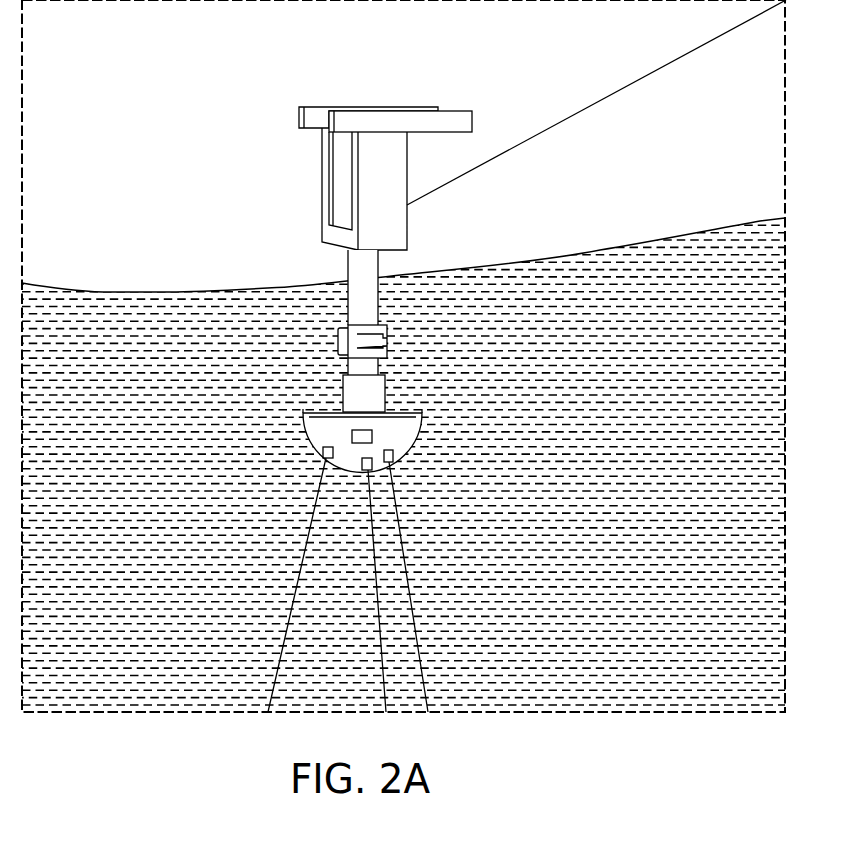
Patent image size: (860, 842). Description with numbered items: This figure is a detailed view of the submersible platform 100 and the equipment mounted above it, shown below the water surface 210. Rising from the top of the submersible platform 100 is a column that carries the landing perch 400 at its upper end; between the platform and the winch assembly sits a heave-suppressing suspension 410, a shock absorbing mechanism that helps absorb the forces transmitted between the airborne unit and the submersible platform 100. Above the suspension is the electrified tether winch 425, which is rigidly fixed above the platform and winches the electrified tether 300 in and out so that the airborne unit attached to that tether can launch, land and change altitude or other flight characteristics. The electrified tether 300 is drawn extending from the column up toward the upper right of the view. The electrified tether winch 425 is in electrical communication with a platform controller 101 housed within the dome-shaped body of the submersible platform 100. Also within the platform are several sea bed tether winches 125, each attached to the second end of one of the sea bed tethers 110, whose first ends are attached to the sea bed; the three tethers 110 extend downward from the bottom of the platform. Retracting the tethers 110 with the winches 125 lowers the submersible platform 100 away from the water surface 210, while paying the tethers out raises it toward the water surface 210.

The submersible platform 100 is at (364, 465).
The platform controller 101 is at (352, 432).
The sea bed tethers 110 is at (287, 602).
The sea bed tether winch 125 is at (362, 465).
The water surface 210 is at (173, 282).
The electrified tether 300 is at (617, 78).
The landing perch 400 is at (312, 100).
The heave-suppressing suspension 410 is at (385, 398).
The electrified tether winch 425 is at (387, 342).